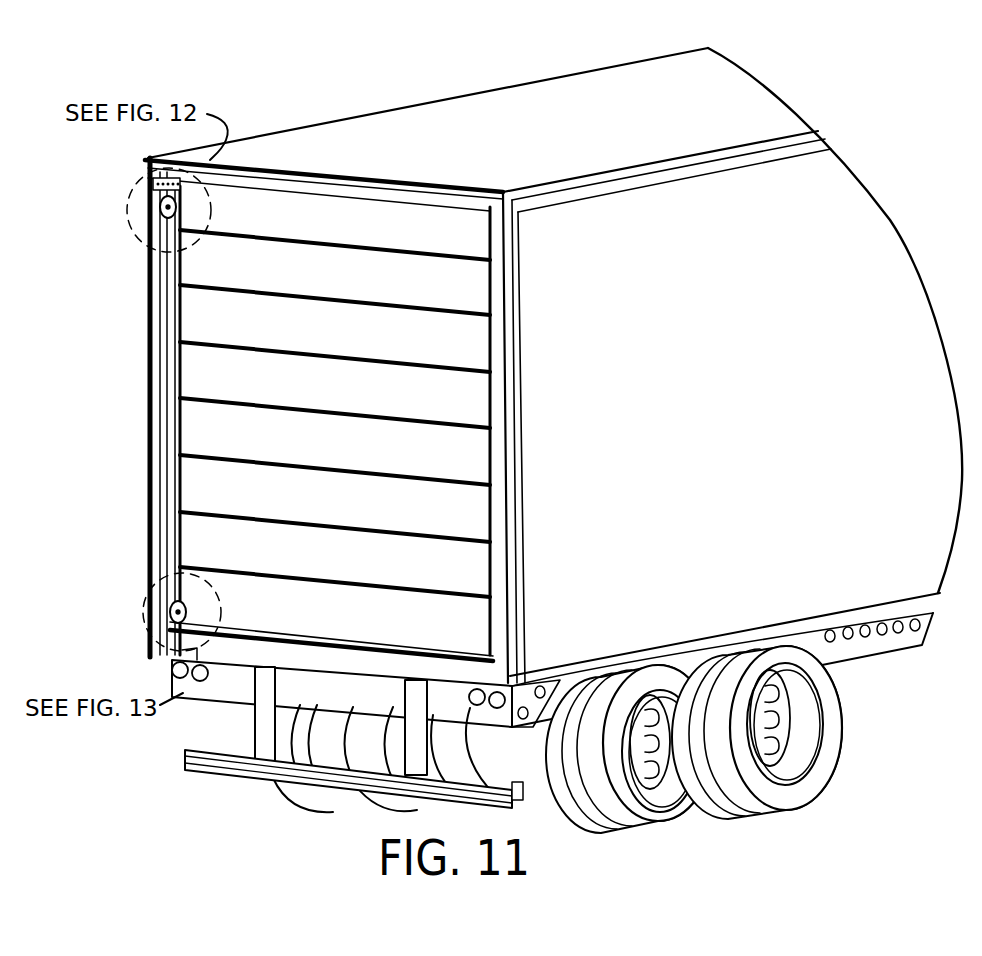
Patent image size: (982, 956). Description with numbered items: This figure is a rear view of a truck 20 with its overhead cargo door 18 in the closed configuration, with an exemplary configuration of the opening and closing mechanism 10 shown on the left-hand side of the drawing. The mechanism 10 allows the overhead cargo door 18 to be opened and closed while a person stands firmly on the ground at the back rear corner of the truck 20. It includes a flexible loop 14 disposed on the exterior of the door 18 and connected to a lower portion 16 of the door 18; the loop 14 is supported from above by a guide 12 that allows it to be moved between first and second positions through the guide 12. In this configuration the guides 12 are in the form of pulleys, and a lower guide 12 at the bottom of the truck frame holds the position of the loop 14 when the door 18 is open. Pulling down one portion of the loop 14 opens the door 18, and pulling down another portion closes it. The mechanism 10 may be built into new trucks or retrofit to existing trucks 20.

The opening and closing mechanism 10 is at (188, 276).
The guide 12 is at (155, 212).
The flexible loop 14 is at (158, 408).
The lower portion of door 16 is at (457, 587).
The overhead cargo door 18 is at (438, 450).
The truck 20 is at (660, 122).